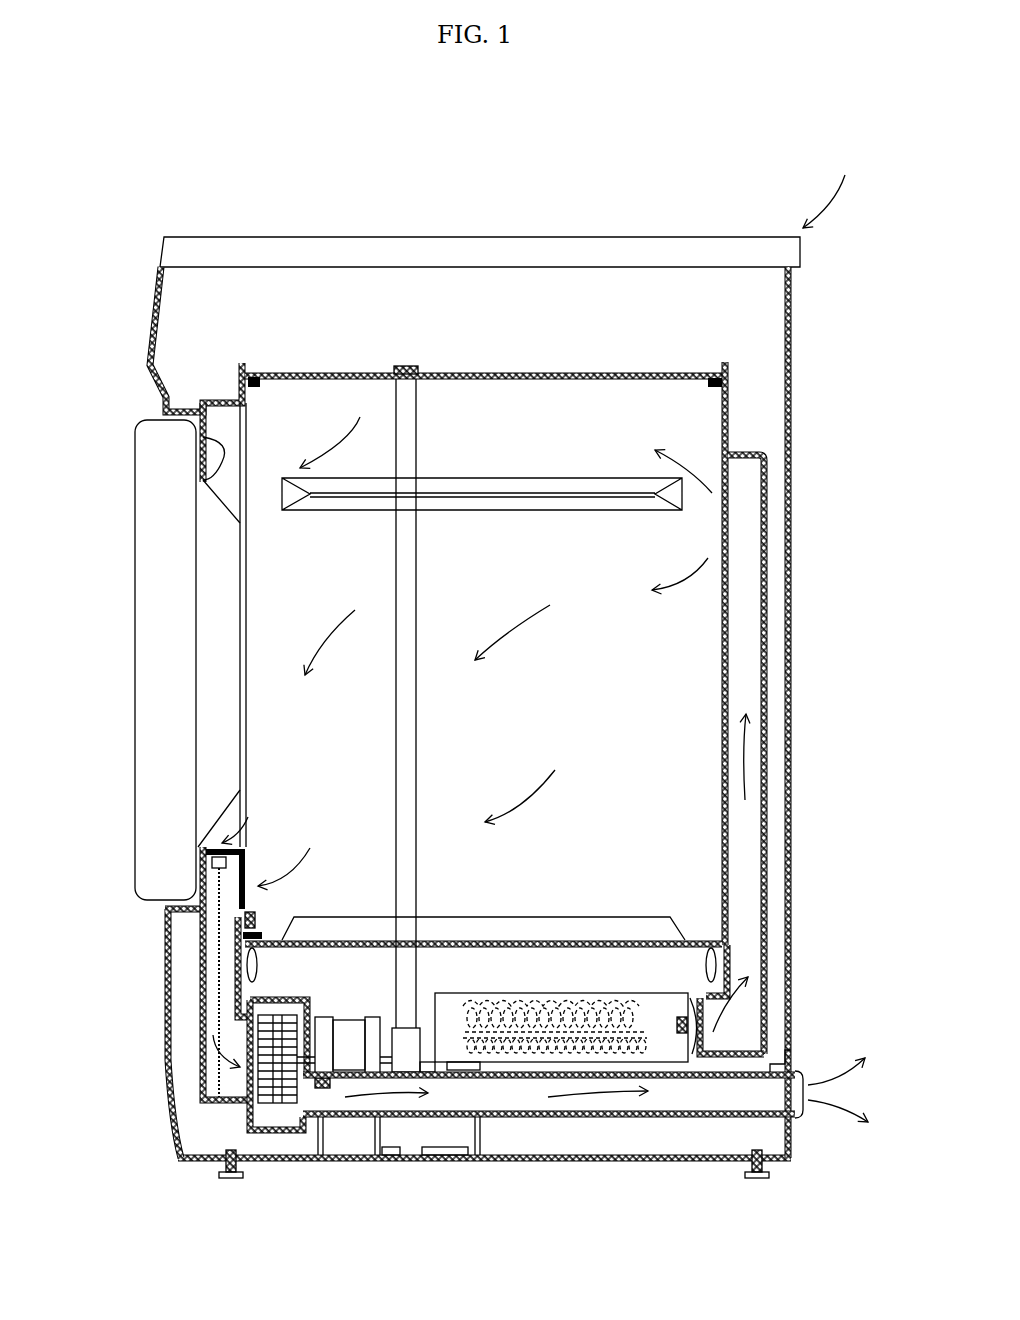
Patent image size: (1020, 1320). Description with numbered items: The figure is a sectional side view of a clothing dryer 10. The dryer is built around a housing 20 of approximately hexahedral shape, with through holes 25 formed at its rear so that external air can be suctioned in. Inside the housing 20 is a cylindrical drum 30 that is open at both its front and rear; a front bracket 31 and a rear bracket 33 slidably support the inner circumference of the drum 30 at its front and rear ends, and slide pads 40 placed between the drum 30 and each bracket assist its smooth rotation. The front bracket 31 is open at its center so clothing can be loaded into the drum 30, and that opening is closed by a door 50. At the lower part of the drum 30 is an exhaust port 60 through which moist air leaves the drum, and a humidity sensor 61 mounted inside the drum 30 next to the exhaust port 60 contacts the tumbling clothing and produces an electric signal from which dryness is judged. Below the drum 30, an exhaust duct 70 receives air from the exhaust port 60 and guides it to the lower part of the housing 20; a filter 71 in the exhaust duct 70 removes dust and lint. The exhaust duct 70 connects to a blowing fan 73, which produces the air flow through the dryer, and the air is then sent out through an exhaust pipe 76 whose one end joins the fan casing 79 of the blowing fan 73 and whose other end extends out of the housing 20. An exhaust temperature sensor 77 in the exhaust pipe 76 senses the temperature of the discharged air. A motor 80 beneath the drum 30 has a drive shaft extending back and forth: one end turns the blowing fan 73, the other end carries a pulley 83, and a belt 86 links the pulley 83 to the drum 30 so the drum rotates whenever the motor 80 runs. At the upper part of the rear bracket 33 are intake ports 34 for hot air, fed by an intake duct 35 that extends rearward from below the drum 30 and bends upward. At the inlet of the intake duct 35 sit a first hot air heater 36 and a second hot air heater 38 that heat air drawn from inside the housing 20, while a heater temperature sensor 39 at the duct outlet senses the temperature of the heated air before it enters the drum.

The clothing dryer 10 is at (316, 146).
The housing 20 is at (505, 662).
The through holes 25 is at (791, 598).
The cylindrical drum 30 is at (488, 379).
The front bracket 31 is at (205, 484).
The rear bracket 33 is at (728, 636).
The intake ports 34 is at (722, 533).
The intake duct 35 is at (769, 908).
The first hot air heater 36 is at (530, 1000).
The second hot air heater 38 is at (630, 1030).
The heater temperature sensor 39 is at (683, 1036).
The slide pads 40 is at (254, 377).
The door 50 is at (151, 664).
The exhaust port 60 is at (247, 868).
The humidity sensor 61 is at (256, 920).
The exhaust duct 70 is at (208, 975).
The filter 71 is at (214, 1017).
The blowing fan 73 is at (278, 1104).
The exhaust pipe 76 is at (630, 1118).
The exhaust temperature sensor 77 is at (325, 1090).
The fan casing 79 is at (247, 1118).
The motor 80 is at (346, 1027).
The pulley 83 is at (426, 1030).
The belt 86 is at (400, 368).